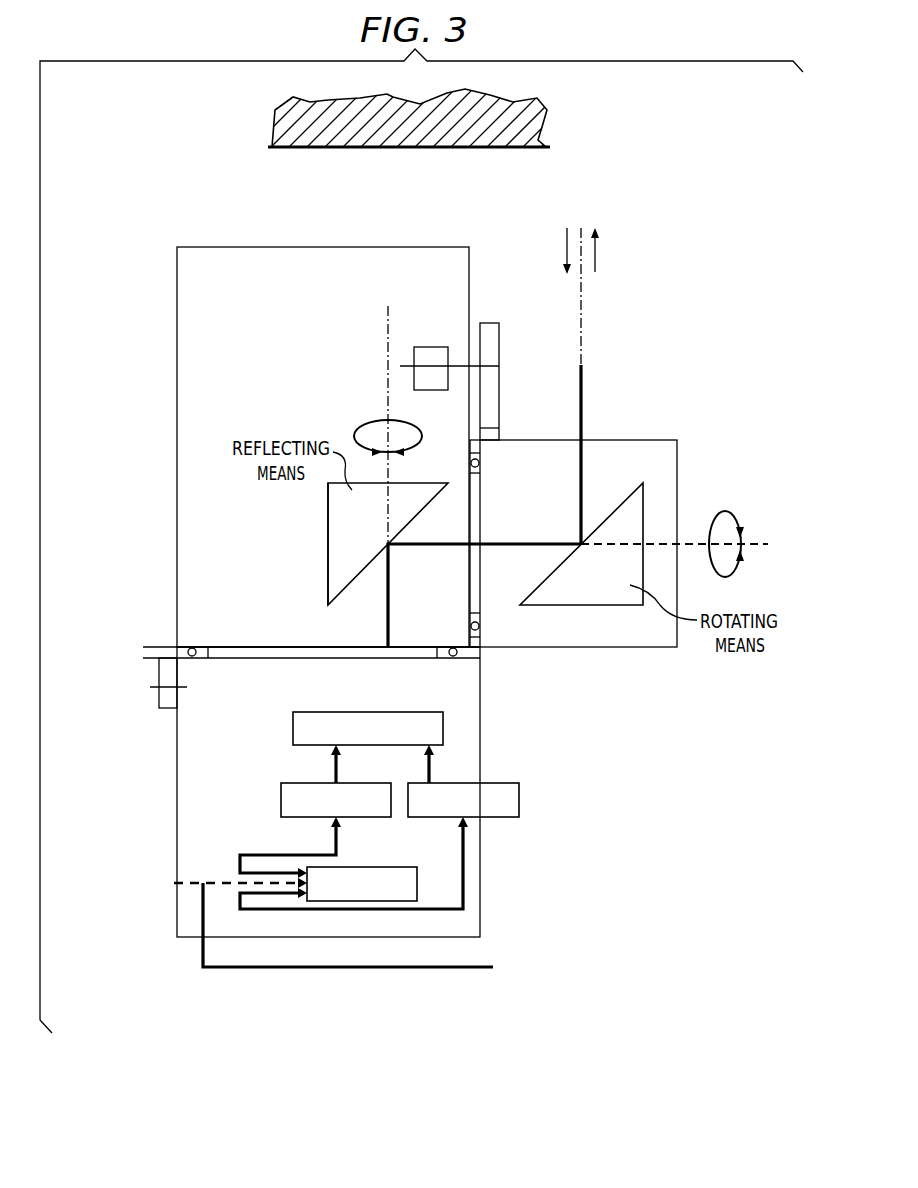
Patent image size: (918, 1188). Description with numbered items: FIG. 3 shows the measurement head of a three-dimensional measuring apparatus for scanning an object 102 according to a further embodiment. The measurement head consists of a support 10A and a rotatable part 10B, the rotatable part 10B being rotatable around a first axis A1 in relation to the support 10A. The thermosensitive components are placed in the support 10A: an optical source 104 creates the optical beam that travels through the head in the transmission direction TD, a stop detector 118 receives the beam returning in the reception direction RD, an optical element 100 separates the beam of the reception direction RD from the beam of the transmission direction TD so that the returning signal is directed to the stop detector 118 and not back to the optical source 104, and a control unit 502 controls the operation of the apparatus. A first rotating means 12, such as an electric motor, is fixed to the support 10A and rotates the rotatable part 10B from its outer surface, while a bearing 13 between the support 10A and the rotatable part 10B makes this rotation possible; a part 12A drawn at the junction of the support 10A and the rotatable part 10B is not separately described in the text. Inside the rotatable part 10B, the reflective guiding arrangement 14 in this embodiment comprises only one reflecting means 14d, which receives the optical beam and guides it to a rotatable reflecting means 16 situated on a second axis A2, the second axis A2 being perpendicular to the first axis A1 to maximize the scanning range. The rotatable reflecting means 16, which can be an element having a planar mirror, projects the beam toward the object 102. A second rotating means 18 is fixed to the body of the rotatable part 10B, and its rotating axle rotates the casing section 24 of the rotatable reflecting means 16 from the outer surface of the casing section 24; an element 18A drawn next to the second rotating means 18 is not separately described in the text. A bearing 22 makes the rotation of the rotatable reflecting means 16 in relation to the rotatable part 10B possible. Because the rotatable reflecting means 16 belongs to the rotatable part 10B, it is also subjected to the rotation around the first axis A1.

The object 102 is at (478, 148).
The rotatable part 10B is at (176, 266).
The support 10A is at (176, 822).
The transmission direction TD is at (566, 252).
The reception direction RD is at (596, 247).
The first axis A1 is at (386, 334).
The second axis A2 is at (752, 544).
The second rotating means 18 is at (430, 347).
The motor shaft 18A is at (455, 368).
The bearing 22 is at (482, 460).
The casing section 24 is at (650, 440).
The reflective guiding arrangement 14 is at (388, 545).
The reflecting means 14d is at (326, 524).
The rotatable reflecting means 16 is at (603, 605).
The mounting plate 12A is at (157, 685).
The bearing 13 is at (192, 647).
The first rotating means 12 is at (158, 705).
The optical element 100 is at (330, 710).
The optical source 104 is at (300, 782).
The stop detector 118 is at (506, 818).
The control unit 502 is at (395, 866).